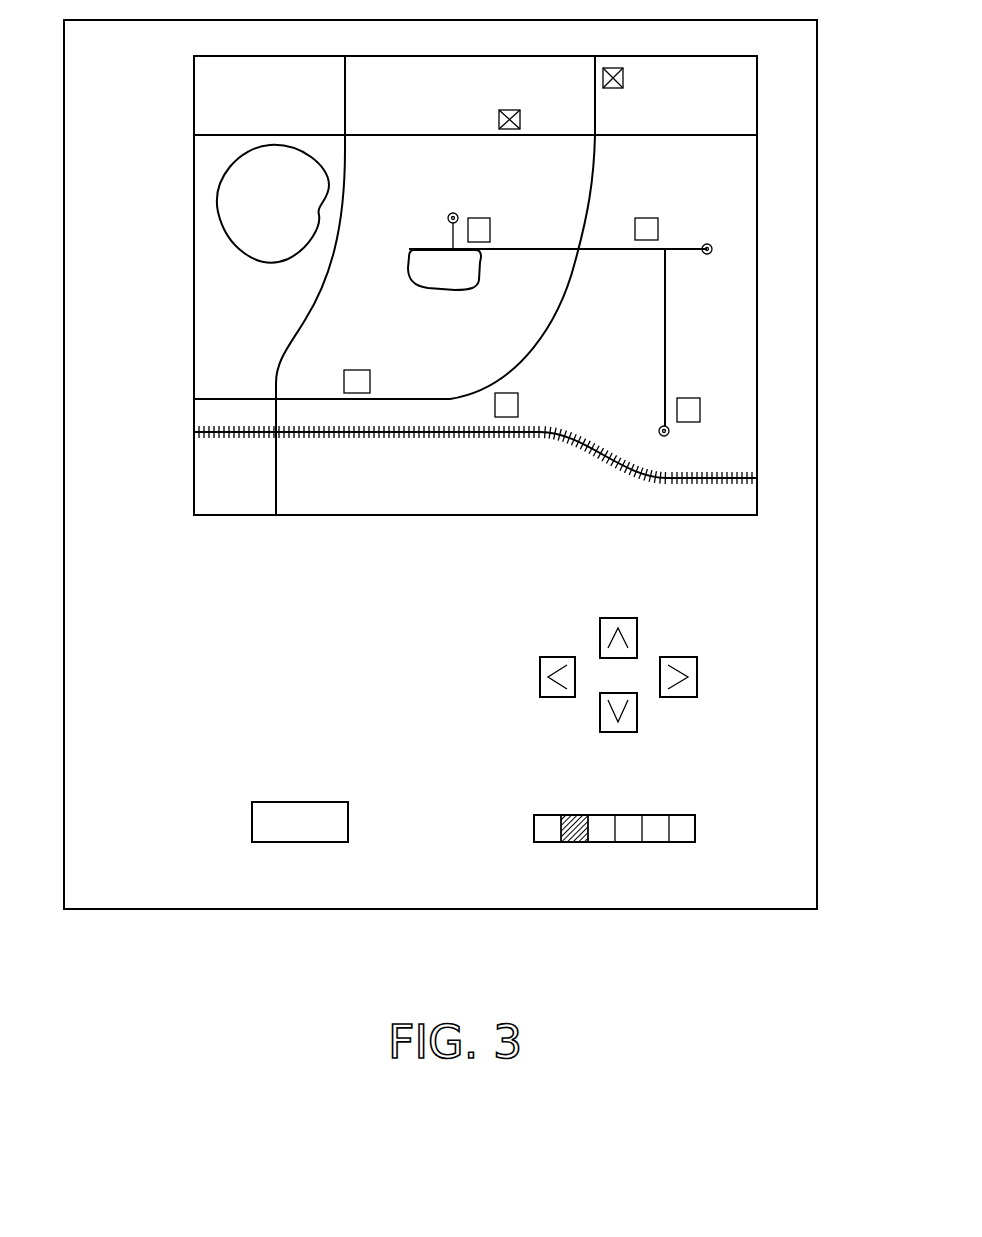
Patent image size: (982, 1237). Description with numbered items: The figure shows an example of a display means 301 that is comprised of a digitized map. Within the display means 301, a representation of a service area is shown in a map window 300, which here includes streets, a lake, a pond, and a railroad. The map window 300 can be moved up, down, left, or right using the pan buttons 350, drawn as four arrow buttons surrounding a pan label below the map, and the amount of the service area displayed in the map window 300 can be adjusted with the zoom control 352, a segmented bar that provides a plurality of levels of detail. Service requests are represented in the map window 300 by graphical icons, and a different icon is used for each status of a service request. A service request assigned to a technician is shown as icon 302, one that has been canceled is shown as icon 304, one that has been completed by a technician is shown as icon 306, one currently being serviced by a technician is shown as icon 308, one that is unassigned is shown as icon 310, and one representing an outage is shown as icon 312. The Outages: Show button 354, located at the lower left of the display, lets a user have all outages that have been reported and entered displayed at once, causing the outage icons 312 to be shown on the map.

The map window 300 is at (162, 310).
The display means 301 is at (63, 618).
The assigned service request icon 302 is at (658, 235).
The canceled service request icon 304 is at (623, 78).
The completed service request icon 306 is at (370, 382).
The in-service service request icon 308 is at (490, 235).
The unassigned service request icon 310 is at (700, 412).
The outage icon 312 is at (520, 125).
The pan buttons 350 is at (665, 645).
The zoom control 352 is at (650, 785).
The Outages: Show button 354 is at (170, 793).